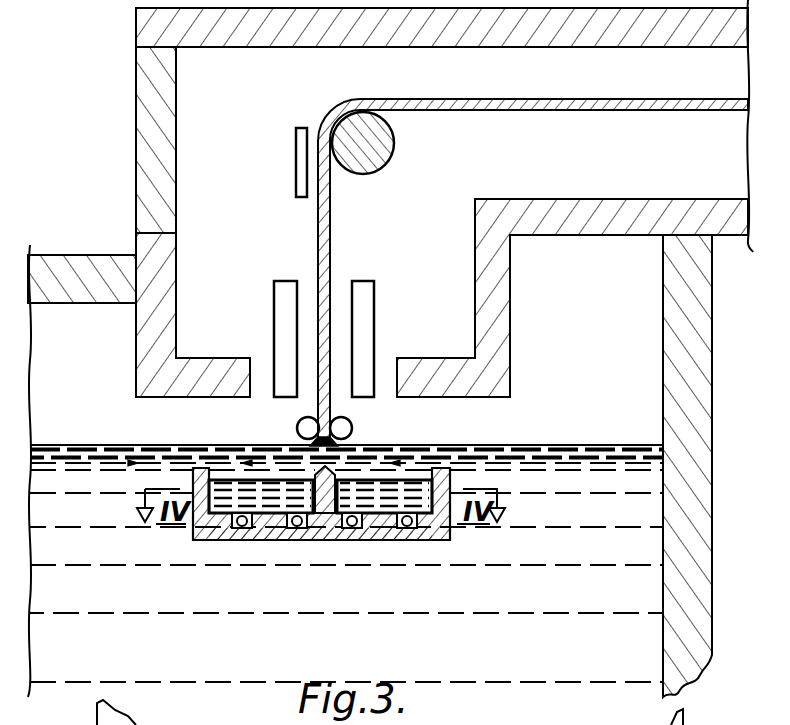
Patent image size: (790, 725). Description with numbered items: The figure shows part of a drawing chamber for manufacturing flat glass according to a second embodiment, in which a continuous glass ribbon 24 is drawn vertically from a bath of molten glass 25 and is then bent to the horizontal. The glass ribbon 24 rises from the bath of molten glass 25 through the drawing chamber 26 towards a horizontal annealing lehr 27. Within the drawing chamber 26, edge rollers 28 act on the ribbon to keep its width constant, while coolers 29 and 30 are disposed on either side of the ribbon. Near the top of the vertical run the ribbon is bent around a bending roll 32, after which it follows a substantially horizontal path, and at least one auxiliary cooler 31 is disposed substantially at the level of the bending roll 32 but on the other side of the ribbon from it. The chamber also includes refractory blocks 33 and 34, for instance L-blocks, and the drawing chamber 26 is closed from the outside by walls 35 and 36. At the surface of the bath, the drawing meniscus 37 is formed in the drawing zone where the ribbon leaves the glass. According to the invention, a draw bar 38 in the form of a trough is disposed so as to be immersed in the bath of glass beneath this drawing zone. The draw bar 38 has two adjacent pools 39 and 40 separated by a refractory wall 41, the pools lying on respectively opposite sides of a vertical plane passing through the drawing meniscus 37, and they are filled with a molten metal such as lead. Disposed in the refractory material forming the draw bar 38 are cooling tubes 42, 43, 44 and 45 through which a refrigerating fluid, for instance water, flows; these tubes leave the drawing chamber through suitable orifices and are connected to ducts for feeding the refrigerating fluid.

The glass ribbon 24 is at (330, 244).
The bath of molten glass 25 is at (483, 665).
The drawing chamber 26 is at (250, 83).
The horizontal annealing lehr 27 is at (713, 84).
The edge rollers 28 is at (352, 424).
The cooler 29 is at (363, 315).
The cooler 30 is at (285, 312).
The auxiliary cooler 31 is at (300, 155).
The bending roll 32 is at (375, 153).
The refractory block 33 is at (475, 258).
The refractory block 34 is at (165, 263).
The wall 35 is at (160, 160).
The wall 36 is at (144, 17).
The drawing meniscus 37 is at (308, 446).
The draw bar 38 is at (318, 538).
The pool 39 is at (195, 533).
The pool 40 is at (383, 529).
The refractory wall 41 is at (382, 447).
The cooling tube 42 is at (228, 532).
The cooling tube 43 is at (273, 530).
The cooling tube 44 is at (353, 527).
The cooling tube 45 is at (405, 530).